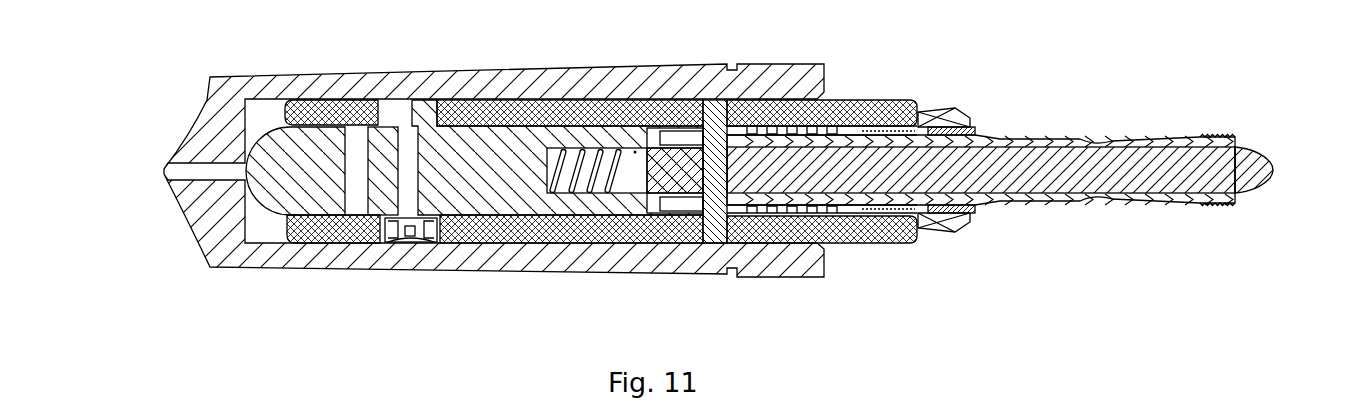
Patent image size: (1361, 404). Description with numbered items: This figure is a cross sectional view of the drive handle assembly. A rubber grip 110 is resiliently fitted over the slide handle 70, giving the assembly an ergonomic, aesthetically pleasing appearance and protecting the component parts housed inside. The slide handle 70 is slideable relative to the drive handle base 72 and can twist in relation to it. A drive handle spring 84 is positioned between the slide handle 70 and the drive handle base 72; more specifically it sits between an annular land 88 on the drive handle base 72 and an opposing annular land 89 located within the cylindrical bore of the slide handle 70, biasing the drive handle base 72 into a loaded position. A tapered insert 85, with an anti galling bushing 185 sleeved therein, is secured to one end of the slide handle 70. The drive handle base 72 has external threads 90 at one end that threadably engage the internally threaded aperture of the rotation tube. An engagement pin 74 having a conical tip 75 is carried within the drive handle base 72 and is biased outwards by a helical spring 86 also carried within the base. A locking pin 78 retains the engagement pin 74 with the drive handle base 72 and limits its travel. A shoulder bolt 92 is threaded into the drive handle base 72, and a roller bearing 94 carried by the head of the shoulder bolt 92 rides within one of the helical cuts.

The rubber grip 110 is at (262, 73).
The slide handle 70 is at (360, 110).
The drive handle base 72 is at (492, 160).
The locking pin 78 is at (708, 128).
The opposing annular land 89 is at (847, 117).
The helical spring 86 is at (600, 152).
The annular land 88 is at (652, 178).
The drive handle spring 84 is at (792, 212).
The engagement pin 74 is at (1078, 165).
The external threads 90 is at (1225, 135).
The conical tip 75 is at (1275, 160).
The anti galling bushing 185 is at (958, 214).
The tapered insert 85 is at (937, 222).
The shoulder bolt 92 is at (390, 235).
The roller bearing 94 is at (442, 225).